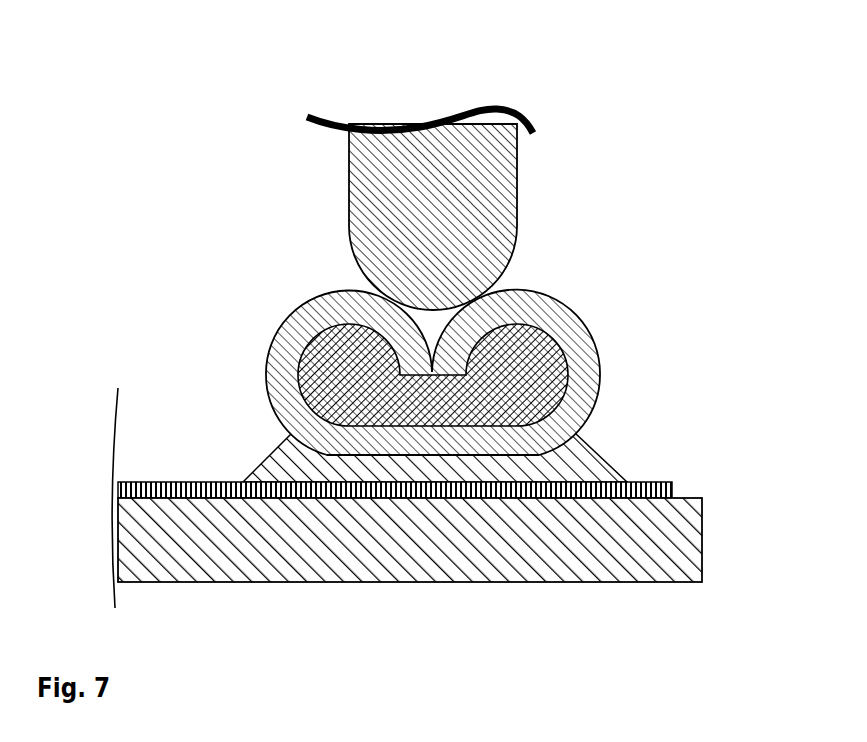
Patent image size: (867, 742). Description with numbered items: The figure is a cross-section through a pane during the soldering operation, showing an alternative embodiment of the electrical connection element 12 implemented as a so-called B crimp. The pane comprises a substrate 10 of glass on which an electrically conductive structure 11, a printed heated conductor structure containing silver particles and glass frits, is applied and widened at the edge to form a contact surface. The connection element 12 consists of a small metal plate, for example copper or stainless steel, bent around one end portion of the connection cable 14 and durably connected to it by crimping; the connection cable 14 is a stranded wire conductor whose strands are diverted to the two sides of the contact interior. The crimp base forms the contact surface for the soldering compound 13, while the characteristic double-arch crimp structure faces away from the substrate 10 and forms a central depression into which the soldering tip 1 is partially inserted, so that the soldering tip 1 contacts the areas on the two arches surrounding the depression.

The soldering tip 1 is at (507, 210).
The substrate 10 is at (675, 533).
The electrically conductive structure 11 is at (672, 490).
The electrical connection element 12 is at (598, 397).
The soldering compound 13 is at (583, 468).
The connection cable 14 is at (550, 368).